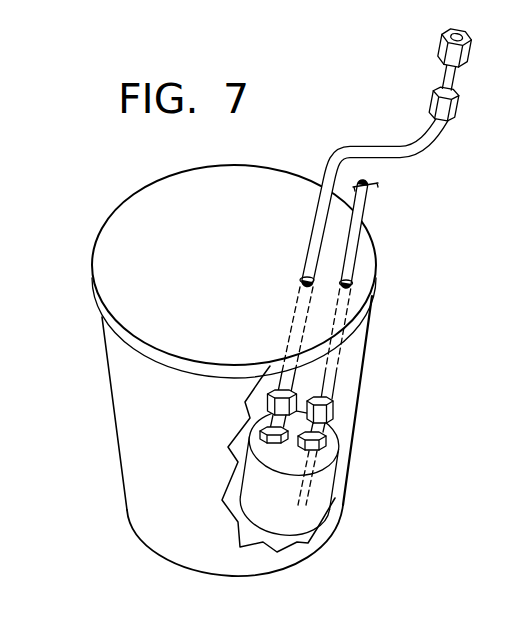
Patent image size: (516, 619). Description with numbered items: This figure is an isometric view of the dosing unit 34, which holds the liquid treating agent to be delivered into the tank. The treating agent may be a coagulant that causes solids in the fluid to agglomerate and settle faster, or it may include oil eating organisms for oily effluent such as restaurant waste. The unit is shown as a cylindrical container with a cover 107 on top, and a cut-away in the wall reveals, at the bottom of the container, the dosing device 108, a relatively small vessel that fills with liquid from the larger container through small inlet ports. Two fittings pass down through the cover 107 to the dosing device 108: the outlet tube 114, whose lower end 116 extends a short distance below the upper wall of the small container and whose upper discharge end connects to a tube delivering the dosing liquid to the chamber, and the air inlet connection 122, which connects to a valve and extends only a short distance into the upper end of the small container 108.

The dosing unit 34 is at (133, 544).
The lid 107 is at (124, 372).
The dosing device 108 is at (313, 505).
The outlet tube 114 is at (334, 379).
The lower end 116 is at (345, 483).
The air inlet connection 122 is at (246, 405).